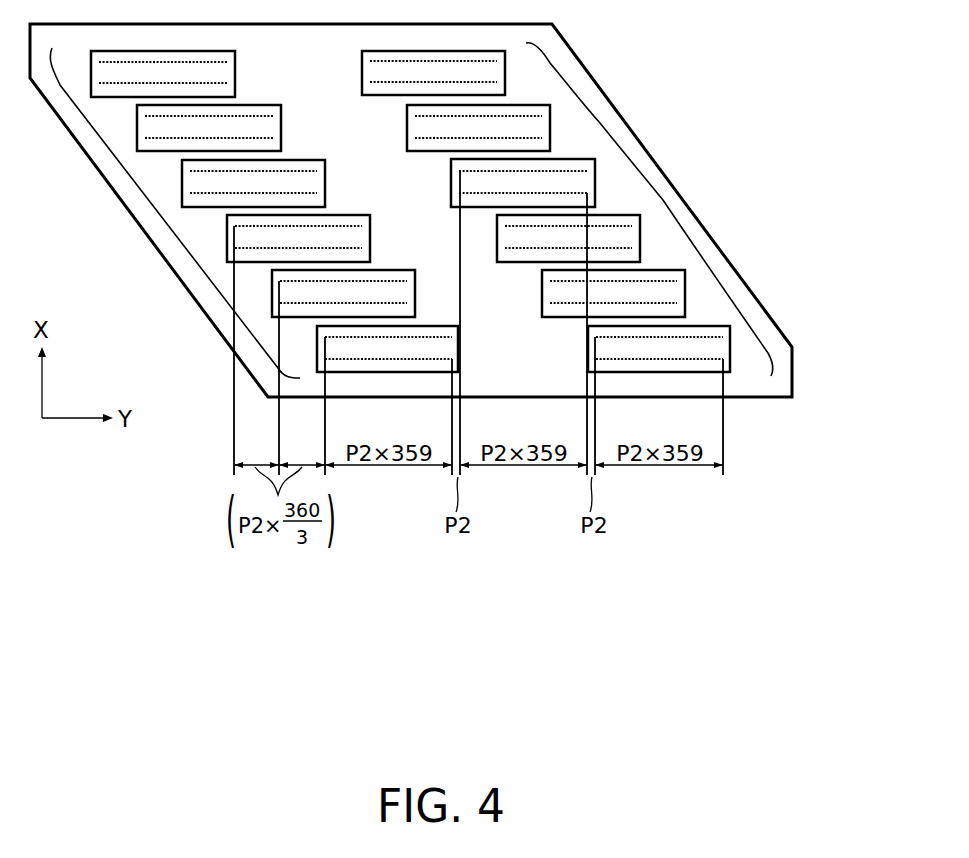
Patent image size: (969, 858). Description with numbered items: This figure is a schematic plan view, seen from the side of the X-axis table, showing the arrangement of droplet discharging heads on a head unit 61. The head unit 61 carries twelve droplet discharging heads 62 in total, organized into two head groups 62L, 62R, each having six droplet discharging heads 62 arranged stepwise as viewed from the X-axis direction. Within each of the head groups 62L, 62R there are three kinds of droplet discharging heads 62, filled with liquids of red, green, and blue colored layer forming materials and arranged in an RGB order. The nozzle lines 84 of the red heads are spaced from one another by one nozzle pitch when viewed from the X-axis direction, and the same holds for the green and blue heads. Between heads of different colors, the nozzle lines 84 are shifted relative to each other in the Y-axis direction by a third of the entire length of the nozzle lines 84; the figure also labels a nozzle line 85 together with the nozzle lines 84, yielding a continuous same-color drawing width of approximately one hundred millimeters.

The head unit 61 is at (792, 367).
The droplet discharging heads 62 is at (410, 202).
The head group 62L is at (148, 226).
The head group 62R is at (665, 198).
The nozzle lines 84 is at (366, 155).
The light-emitting portion 85 is at (420, 138).